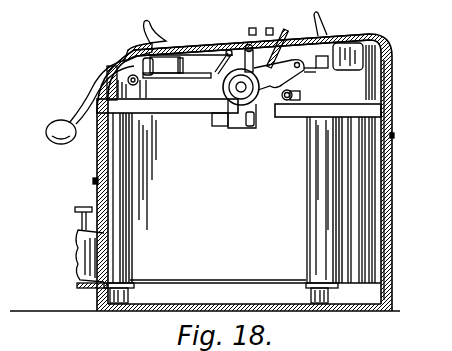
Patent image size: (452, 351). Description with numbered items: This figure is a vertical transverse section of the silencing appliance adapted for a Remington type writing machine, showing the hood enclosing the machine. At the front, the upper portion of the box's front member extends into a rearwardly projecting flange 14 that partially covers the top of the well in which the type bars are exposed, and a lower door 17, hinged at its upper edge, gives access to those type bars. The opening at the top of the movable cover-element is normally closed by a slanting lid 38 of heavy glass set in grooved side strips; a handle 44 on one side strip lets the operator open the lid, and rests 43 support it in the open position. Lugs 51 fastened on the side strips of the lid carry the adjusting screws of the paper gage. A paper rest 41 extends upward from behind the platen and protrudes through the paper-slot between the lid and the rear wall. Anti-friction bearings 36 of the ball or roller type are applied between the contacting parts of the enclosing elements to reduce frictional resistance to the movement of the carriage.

The rearwardly projecting flange 14 is at (133, 48).
The lower door 17 is at (98, 161).
The anti-friction bearings 36 is at (106, 87).
The slanting lid 38 is at (204, 40).
The paper rest 41 is at (285, 31).
The rests 43 is at (328, 17).
The handle 44 is at (156, 22).
The lugs 51 is at (251, 30).